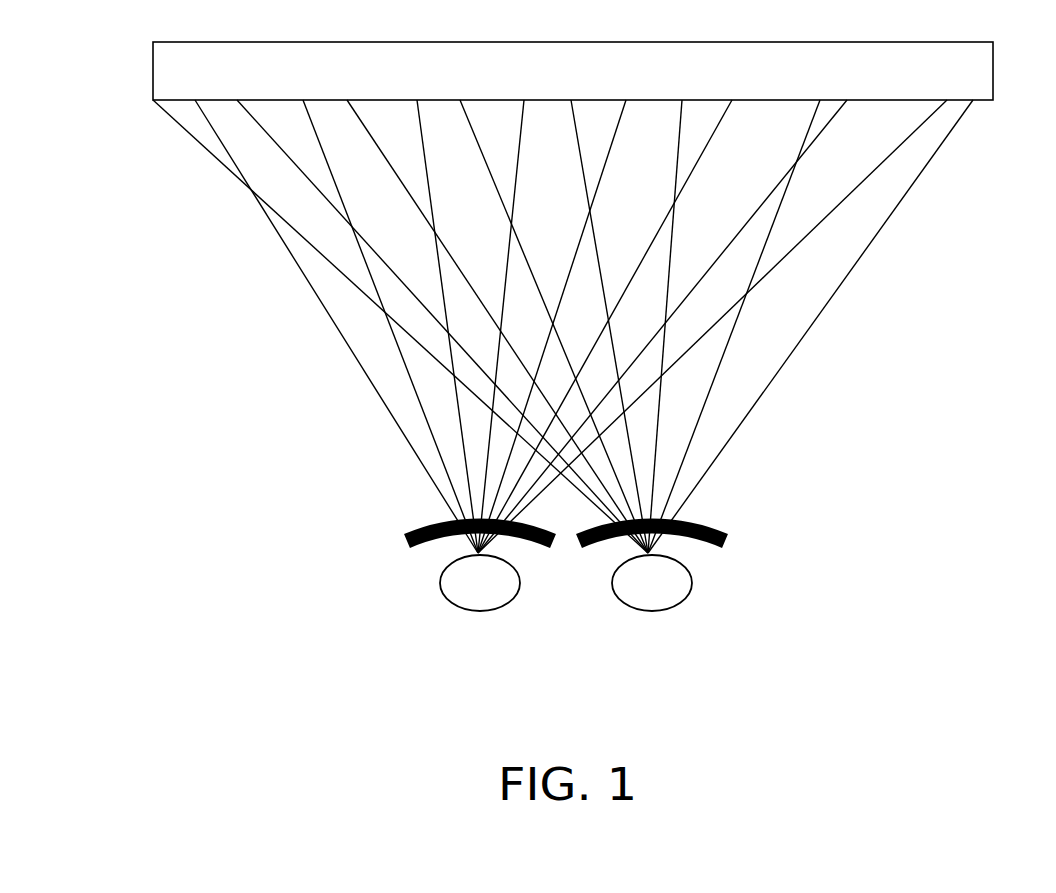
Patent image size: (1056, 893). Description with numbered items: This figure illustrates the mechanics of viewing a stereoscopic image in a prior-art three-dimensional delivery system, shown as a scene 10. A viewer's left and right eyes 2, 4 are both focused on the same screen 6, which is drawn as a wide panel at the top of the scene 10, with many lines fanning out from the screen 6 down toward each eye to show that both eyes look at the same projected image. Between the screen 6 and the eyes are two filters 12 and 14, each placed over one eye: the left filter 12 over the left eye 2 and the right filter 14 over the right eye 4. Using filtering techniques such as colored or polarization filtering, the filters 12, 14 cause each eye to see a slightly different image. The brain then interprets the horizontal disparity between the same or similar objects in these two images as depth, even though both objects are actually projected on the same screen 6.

The scene 10 is at (69, 74).
The screen 6 is at (993, 68).
The filter 12 is at (405, 536).
The filter 14 is at (727, 536).
The left eye 2 is at (440, 587).
The right eye 4 is at (690, 587).